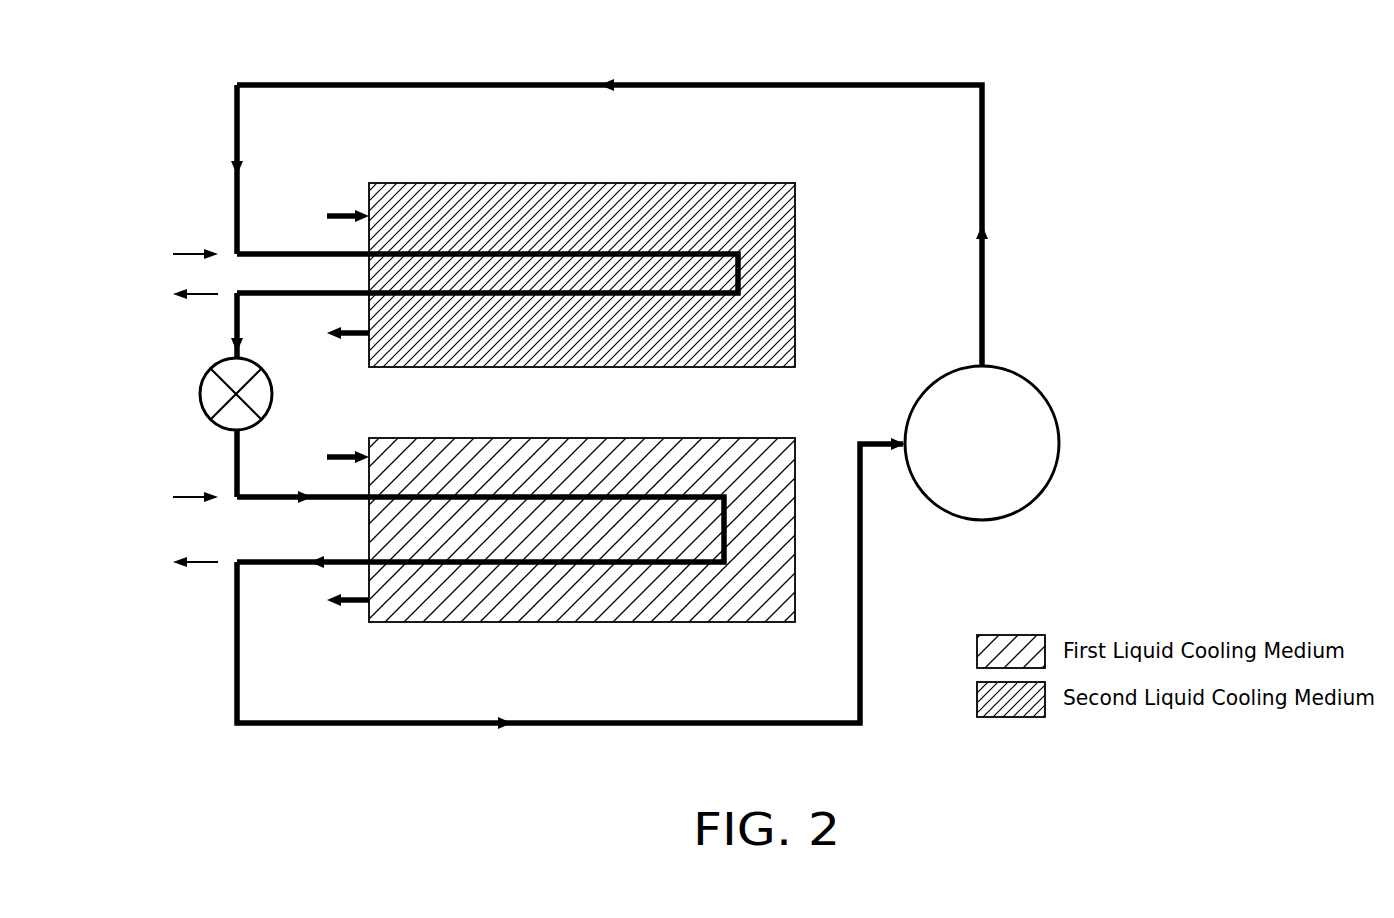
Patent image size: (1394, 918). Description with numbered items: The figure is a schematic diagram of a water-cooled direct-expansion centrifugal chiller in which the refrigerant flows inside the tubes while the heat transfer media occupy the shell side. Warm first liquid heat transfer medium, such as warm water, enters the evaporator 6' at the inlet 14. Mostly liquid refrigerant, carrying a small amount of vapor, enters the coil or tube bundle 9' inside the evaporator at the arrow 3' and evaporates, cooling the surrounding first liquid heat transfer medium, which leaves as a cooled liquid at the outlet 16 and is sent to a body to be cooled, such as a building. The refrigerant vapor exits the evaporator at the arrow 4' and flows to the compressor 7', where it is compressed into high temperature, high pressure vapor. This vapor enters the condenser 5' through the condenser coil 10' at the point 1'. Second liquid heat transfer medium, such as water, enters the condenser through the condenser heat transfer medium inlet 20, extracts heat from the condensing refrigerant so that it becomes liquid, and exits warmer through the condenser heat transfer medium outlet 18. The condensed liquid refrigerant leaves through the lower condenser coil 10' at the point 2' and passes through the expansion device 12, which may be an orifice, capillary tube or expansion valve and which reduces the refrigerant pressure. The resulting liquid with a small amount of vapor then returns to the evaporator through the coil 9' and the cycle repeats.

The condenser coil inlet 1' is at (181, 253).
The condenser coil outlet 2' is at (181, 293).
The evaporator coil inlet arrow 3' is at (181, 496).
The evaporator coil outlet arrow 4' is at (181, 561).
The condenser 5' is at (582, 256).
The evaporator 6' is at (582, 547).
The compressor 7' is at (968, 441).
The coil or tube bundle 9' is at (480, 529).
The condenser coil 10' is at (487, 273).
The expansion device 12 is at (200, 393).
The inlet 14 is at (345, 454).
The outlet 16 is at (344, 607).
The condenser heat transfer medium outlet 18 is at (344, 340).
The condenser heat transfer medium inlet 20 is at (345, 213).